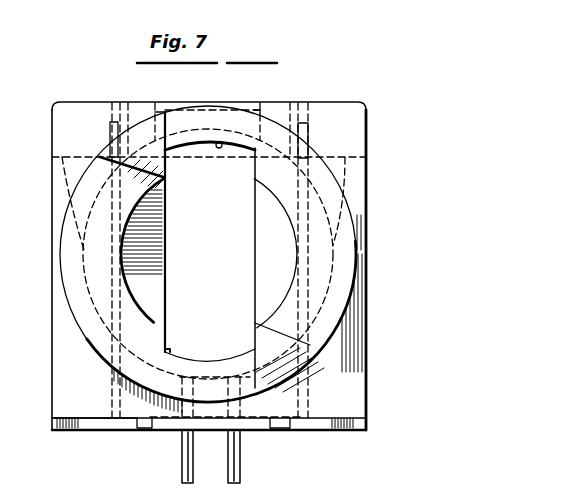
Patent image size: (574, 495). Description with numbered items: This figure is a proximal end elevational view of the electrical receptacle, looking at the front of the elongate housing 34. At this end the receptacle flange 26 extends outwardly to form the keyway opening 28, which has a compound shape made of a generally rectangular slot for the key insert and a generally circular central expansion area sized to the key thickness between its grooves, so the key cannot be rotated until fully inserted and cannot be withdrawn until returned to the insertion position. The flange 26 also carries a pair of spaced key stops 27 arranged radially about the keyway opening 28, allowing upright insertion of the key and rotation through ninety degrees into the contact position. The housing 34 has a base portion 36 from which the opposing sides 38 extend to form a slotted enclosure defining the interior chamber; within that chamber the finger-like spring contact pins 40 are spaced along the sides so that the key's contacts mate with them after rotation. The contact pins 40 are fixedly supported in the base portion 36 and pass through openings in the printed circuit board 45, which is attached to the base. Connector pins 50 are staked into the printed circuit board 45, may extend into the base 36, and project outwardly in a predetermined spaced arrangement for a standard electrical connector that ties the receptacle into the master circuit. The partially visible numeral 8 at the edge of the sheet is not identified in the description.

The housing side wall 8 is at (52, 255).
The receptacle flange 26 is at (347, 201).
The key stops 27 is at (165, 133).
The keyway opening 28 is at (220, 142).
The housing 34 is at (375, 125).
The base portion 36 is at (137, 431).
The opposing sides 38 is at (367, 240).
The contact pins 40 is at (113, 120).
The printed circuit board 45 is at (78, 430).
The connector pins 50 is at (237, 450).